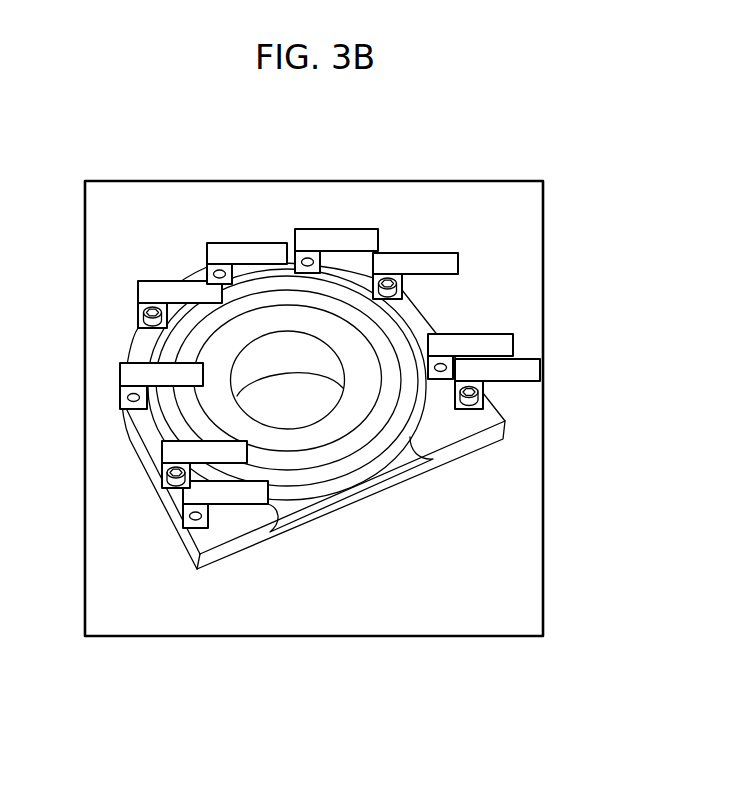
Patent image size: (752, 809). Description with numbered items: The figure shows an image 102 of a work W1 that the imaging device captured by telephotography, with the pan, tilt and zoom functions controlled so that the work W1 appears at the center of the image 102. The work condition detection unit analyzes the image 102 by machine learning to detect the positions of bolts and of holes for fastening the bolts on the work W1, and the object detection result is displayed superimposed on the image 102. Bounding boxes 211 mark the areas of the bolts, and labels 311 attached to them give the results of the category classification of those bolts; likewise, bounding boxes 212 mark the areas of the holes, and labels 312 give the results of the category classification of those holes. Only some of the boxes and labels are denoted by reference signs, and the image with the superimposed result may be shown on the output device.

The image 102 is at (455, 642).
The work W1 is at (140, 350).
The bounding boxes 211 is at (402, 288).
The bounding boxes 212 is at (282, 242).
The labels 311 is at (458, 264).
The labels 312 is at (348, 229).